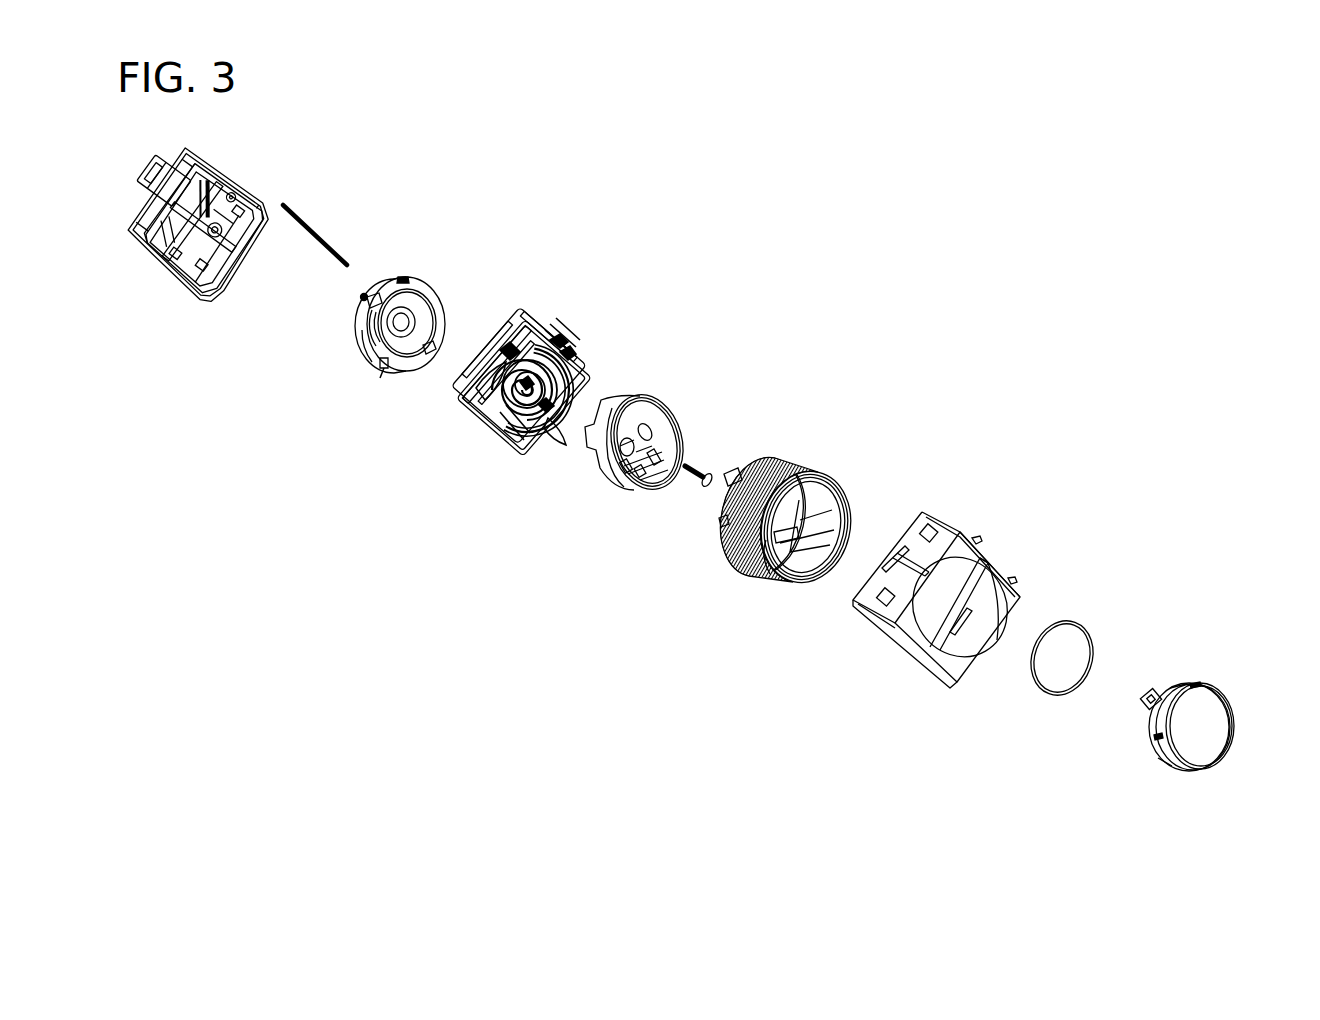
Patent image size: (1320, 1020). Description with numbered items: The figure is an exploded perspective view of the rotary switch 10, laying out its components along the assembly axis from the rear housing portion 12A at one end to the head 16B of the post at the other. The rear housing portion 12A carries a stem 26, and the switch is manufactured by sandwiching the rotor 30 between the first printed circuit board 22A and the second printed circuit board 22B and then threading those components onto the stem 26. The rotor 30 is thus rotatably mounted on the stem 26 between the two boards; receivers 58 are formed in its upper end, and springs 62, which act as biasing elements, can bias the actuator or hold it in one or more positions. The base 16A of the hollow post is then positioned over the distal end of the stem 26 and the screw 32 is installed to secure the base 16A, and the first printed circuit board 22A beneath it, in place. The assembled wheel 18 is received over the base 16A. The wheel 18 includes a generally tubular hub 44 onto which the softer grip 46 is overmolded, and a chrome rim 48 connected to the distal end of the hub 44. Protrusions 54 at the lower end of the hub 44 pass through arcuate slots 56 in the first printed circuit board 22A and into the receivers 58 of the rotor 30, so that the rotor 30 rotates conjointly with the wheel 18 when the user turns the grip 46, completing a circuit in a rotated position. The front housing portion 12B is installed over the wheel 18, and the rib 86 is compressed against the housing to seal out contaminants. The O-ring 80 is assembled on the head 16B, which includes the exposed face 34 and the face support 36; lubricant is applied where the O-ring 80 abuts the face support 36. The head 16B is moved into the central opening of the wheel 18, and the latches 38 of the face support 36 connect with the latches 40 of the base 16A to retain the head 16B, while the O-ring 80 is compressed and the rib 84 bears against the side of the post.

The switch 10 is at (987, 288).
The rear housing portion 12A is at (171, 281).
The front housing portion 12B is at (935, 517).
The base 16A is at (640, 403).
The head 16B is at (1203, 721).
The wheel 18 is at (805, 520).
The first printed circuit board 22A is at (527, 467).
The second printed circuit board 22B is at (505, 327).
The stem 26 is at (203, 237).
The rotor 30 is at (403, 276).
The screw 32 is at (692, 461).
The face 34 is at (1213, 737).
The face support 36 is at (1160, 747).
The latches 38 is at (1155, 690).
The latches 40 is at (624, 422).
The hub 44 is at (779, 458).
The grip 46 is at (807, 480).
The rim 48 is at (840, 507).
The protrusions 54 is at (733, 472).
The arcuate slots 56 is at (483, 393).
The receivers 58 is at (374, 290).
The springs 62 is at (323, 242).
The O-ring 80 is at (1047, 697).
The rib 84 is at (813, 543).
The rib 86 is at (737, 543).